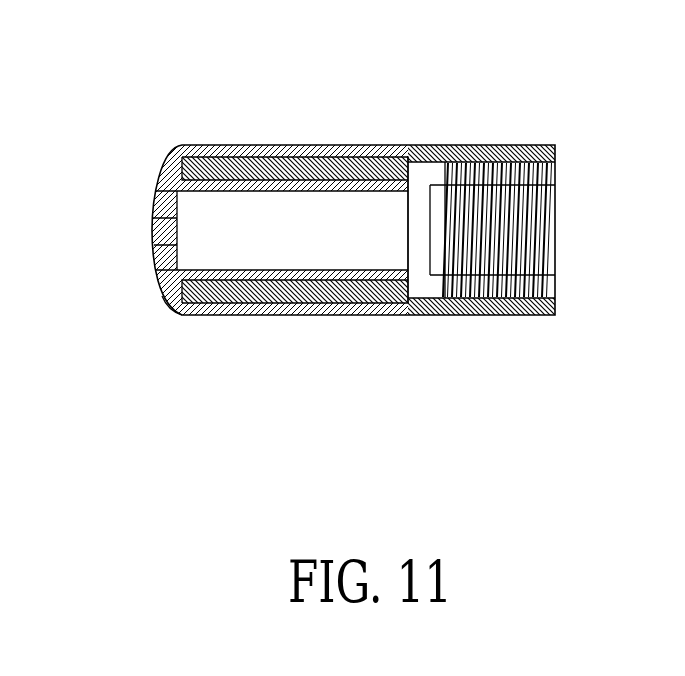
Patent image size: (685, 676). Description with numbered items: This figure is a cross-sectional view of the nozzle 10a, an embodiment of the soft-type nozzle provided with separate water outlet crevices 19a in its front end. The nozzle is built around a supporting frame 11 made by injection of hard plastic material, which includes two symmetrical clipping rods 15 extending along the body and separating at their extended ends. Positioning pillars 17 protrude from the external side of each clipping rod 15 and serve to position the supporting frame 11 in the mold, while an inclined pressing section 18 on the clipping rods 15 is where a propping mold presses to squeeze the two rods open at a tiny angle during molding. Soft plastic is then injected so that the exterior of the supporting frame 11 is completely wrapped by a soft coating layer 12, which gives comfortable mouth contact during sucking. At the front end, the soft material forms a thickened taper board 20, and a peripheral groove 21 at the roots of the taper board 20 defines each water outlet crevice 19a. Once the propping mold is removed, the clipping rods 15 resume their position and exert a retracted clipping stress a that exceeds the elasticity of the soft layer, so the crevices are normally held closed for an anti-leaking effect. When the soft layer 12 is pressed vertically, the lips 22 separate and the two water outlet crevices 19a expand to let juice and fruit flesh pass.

The nozzle 10a is at (475, 113).
The supporting frame 11 is at (557, 247).
The soft coating layer 12 is at (380, 147).
The clipping rods 15 is at (263, 313).
The positioning pillars 17 is at (203, 145).
The inclined pressing section 18 is at (172, 190).
The water outlet crevices 19a is at (150, 228).
The taper board 20 is at (178, 228).
The peripheral groove 21 is at (163, 295).
The lips 22 is at (241, 343).
The clipping stress a is at (292, 427).